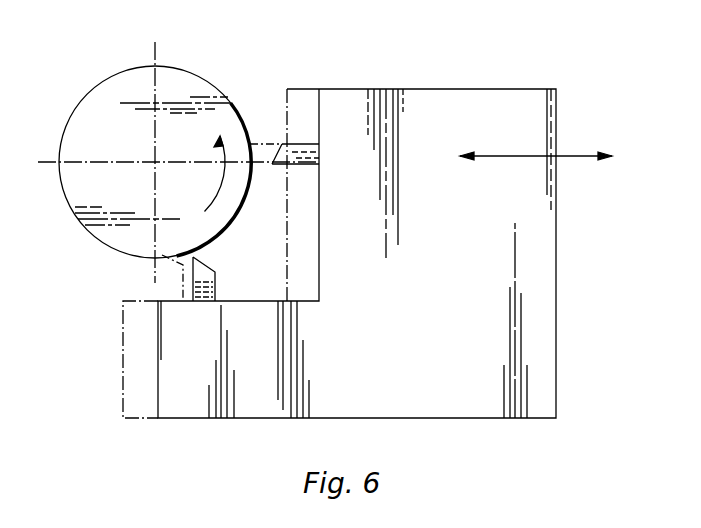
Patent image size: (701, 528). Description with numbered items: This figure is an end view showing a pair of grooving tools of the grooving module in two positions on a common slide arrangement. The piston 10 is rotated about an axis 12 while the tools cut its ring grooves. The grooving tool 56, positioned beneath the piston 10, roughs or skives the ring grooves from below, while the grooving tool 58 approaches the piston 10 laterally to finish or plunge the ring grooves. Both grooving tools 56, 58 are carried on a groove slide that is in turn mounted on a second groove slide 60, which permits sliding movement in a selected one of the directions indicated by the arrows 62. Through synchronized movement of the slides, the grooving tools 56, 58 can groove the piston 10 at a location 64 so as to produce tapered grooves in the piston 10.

The piston 10 is at (191, 71).
The axis 12 is at (155, 162).
The grooving tool 56 is at (216, 275).
The grooving tool 58 is at (300, 143).
The second groove slide 60 is at (556, 207).
The arrows 62 is at (540, 158).
The location 64 is at (232, 74).